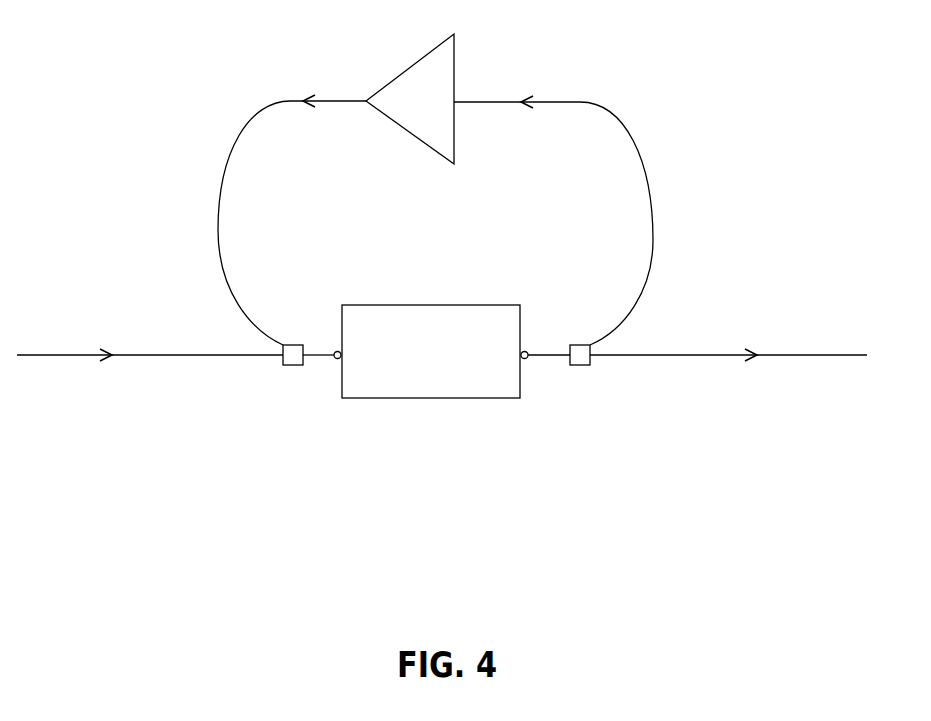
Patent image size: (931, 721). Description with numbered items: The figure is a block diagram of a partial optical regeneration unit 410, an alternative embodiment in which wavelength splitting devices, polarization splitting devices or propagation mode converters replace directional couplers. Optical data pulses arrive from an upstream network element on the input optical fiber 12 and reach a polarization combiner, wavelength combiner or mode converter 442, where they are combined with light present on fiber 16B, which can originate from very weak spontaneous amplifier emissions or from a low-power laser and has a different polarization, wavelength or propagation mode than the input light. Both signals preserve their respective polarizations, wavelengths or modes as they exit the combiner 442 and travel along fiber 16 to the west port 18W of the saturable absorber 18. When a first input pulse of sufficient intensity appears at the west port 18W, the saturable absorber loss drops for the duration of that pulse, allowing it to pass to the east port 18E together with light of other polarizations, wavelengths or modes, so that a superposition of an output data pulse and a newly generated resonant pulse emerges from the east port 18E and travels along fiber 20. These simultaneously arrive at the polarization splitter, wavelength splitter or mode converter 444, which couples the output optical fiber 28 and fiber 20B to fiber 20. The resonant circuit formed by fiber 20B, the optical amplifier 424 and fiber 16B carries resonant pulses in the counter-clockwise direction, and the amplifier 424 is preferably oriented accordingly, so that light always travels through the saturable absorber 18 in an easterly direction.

The input optical fiber 12 is at (33, 355).
The output optical fiber 28 is at (848, 355).
The fiber 16 is at (313, 360).
The fiber 20 is at (543, 357).
The saturable absorber 18 is at (442, 388).
The west port 18W is at (336, 350).
The east port 18E is at (528, 348).
The fiber 16B is at (218, 240).
The fiber 20B is at (654, 235).
The optical amplifier 424 is at (442, 124).
The polarization combiner, wavelength combiner or mode converter 442 is at (283, 360).
The polarization splitter, wavelength splitter or mode converter 444 is at (592, 363).
The partial optical regeneration unit 410 is at (272, 455).